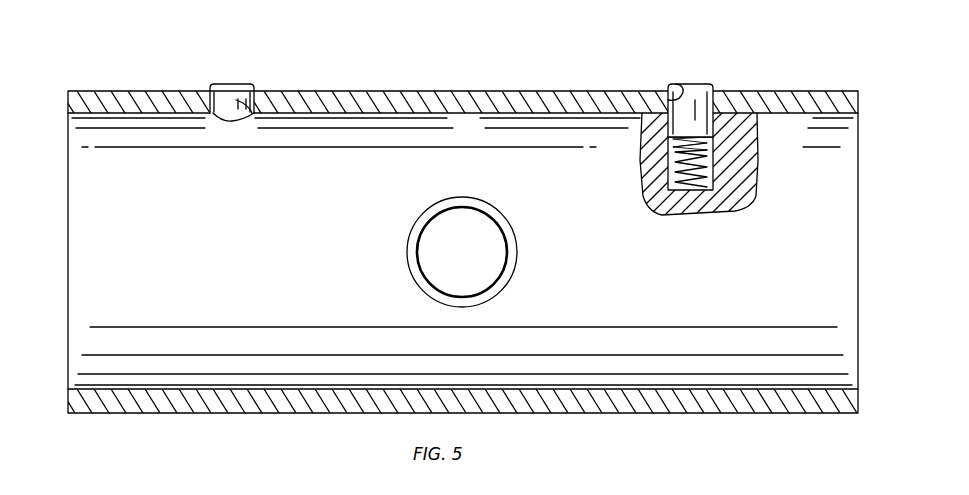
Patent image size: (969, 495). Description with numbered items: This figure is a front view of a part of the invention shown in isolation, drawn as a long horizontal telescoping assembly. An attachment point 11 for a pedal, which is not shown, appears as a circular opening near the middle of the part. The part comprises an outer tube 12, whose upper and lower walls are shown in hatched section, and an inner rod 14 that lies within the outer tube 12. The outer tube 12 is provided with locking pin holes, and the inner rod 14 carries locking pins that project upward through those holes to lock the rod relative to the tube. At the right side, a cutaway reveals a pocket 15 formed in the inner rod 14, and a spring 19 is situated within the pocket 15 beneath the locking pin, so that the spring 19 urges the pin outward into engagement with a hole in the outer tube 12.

The pedal attachment 11 is at (482, 268).
The outer tube 12 is at (378, 91).
The inner rod 14 is at (467, 127).
The pocket 15 is at (672, 165).
The spring mechanism 19 is at (671, 183).